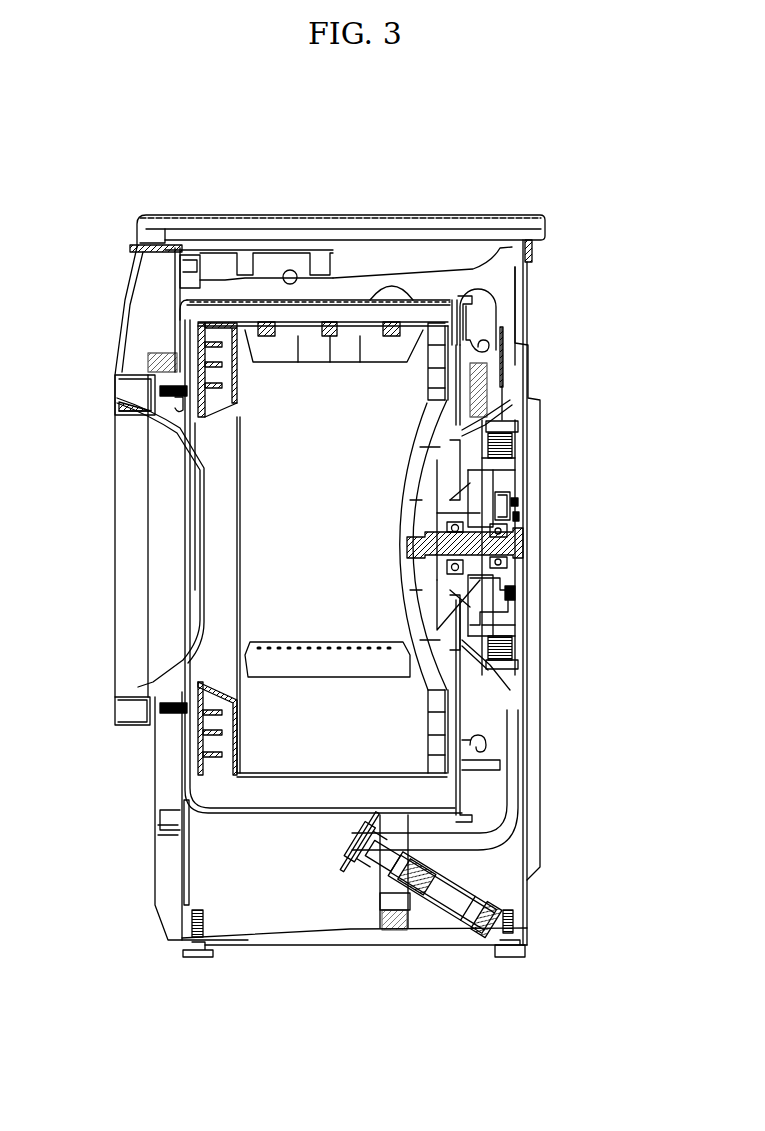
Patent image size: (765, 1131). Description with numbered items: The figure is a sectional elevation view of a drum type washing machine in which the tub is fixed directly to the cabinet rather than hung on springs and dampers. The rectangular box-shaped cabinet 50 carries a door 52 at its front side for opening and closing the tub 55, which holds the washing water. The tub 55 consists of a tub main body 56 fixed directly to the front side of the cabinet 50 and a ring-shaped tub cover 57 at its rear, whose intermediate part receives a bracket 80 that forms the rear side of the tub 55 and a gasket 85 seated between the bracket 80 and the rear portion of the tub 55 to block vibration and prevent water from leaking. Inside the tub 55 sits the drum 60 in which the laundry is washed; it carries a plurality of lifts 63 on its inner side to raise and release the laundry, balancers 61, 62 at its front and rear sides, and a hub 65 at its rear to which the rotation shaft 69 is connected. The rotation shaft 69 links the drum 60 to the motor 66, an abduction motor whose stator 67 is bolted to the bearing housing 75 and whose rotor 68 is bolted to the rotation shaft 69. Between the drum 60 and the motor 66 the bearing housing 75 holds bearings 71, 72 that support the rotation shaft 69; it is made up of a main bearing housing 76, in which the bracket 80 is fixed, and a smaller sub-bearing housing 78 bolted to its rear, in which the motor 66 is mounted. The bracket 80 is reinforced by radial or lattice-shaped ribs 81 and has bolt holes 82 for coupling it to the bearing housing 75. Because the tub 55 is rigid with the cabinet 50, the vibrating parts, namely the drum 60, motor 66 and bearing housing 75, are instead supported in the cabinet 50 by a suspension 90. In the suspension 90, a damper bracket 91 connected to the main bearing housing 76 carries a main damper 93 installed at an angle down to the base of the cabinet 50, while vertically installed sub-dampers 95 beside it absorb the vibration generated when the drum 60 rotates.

The cabinet 50 is at (227, 205).
The door 52 is at (133, 536).
The tub 55 is at (343, 296).
The tub main body 56 is at (423, 298).
The tub cover 57 is at (468, 300).
The drum 60 is at (278, 790).
The balancer 61 is at (208, 752).
The balancer 62 is at (460, 756).
The lift 63 is at (343, 665).
The hub 65 is at (510, 650).
The motor 66 is at (600, 423).
The stator 67 is at (520, 463).
The rotor 68 is at (520, 437).
The rotation shaft 69 is at (520, 547).
The bearing 71 is at (516, 582).
The bearing 72 is at (516, 563).
The bearing housing 75 is at (620, 505).
The main bearing housing 76 is at (500, 523).
The sub-bearing housing 78 is at (513, 522).
The bracket 80 is at (483, 418).
The rib 81 is at (518, 492).
The bolt hole 82 is at (505, 425).
The gasket 85 is at (490, 345).
The suspension 90 is at (590, 850).
The damper bracket 91 is at (508, 830).
The main damper 93 is at (497, 897).
The sub-damper 95 is at (387, 905).